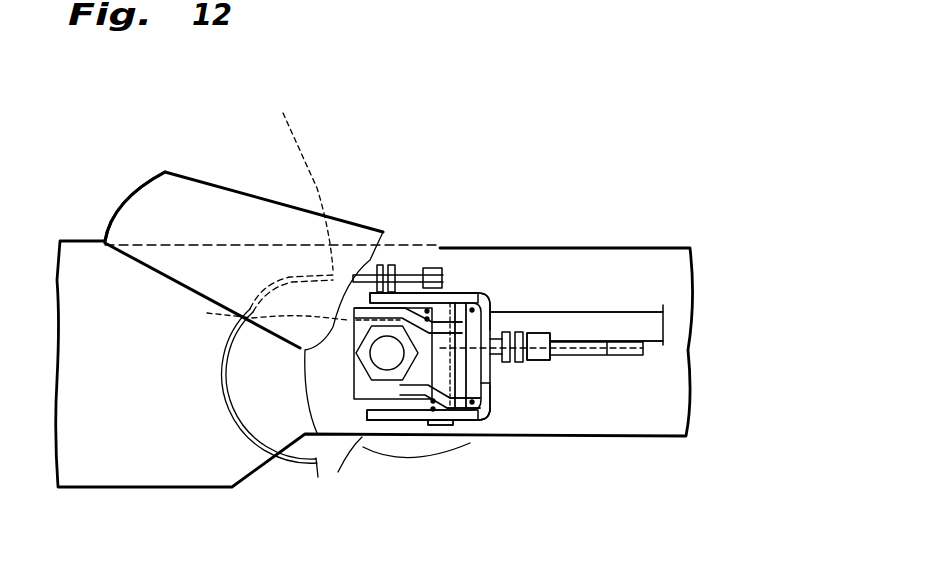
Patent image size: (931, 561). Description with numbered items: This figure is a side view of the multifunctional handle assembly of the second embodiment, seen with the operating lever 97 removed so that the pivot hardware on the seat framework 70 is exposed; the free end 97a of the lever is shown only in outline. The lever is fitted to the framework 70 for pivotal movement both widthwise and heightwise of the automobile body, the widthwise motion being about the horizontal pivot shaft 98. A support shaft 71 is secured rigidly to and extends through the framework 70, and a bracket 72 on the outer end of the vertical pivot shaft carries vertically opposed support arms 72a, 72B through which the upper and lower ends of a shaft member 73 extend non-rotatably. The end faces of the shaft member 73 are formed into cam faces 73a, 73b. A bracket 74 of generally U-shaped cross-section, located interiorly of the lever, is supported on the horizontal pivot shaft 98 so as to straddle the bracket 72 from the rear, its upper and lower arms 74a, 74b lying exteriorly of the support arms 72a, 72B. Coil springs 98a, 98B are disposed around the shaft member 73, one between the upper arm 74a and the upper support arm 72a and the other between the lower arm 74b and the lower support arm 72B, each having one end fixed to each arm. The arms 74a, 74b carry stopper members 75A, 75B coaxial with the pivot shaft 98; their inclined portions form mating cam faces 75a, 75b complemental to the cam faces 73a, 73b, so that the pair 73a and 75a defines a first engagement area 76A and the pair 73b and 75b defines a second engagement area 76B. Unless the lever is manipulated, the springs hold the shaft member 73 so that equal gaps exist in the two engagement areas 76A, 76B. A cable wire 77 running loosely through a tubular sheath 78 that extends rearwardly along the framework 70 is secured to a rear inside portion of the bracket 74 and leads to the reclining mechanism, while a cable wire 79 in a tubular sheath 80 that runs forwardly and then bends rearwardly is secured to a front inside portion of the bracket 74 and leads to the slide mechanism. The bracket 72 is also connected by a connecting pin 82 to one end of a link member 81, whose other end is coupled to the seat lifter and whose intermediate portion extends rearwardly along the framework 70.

The seat framework 70 is at (617, 250).
The support shaft 71 is at (385, 355).
The bracket 72 is at (360, 333).
The upper support arm 72a is at (482, 297).
The lower support arm 72B is at (490, 385).
The shaft member 73 is at (372, 423).
The upper cam face 73a is at (447, 293).
The lower cam face 73b is at (440, 400).
The bracket of U-shaped cross-section 74 is at (480, 417).
The upper arm 74a is at (410, 272).
The lower arm 74b is at (402, 392).
The upper stopper member 75A is at (440, 306).
The lower stopper member 75B is at (432, 405).
The upper mating cam face 75a is at (460, 295).
The lower mating cam face 75b is at (450, 400).
The first engagement area 76A is at (590, 131).
The second engagement area 76B is at (570, 502).
The cable wire 77 is at (632, 348).
The tubular sheath 78 is at (600, 370).
The cable wire 79 is at (290, 463).
The tubular sheath 80 is at (296, 177).
The link member 81 is at (640, 320).
The connecting pin 82 is at (258, 313).
The operating lever 97 is at (230, 188).
The free end 97a is at (128, 188).
The horizontal pivot shaft 98 is at (460, 365).
The coil spring 98a is at (480, 295).
The coil spring 98B is at (497, 420).